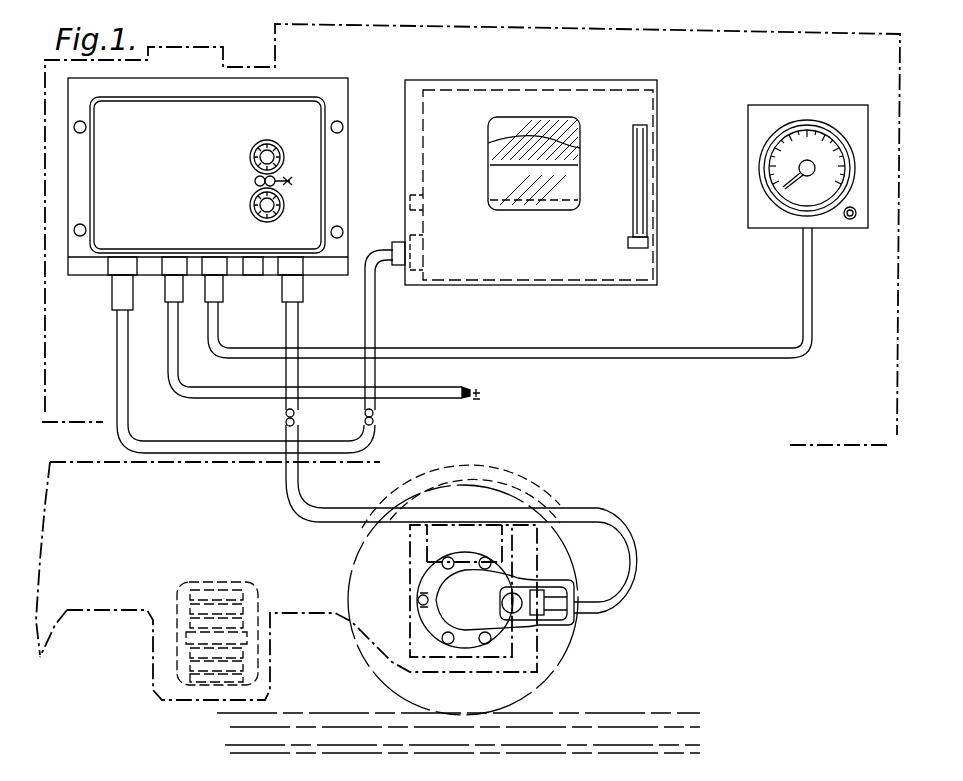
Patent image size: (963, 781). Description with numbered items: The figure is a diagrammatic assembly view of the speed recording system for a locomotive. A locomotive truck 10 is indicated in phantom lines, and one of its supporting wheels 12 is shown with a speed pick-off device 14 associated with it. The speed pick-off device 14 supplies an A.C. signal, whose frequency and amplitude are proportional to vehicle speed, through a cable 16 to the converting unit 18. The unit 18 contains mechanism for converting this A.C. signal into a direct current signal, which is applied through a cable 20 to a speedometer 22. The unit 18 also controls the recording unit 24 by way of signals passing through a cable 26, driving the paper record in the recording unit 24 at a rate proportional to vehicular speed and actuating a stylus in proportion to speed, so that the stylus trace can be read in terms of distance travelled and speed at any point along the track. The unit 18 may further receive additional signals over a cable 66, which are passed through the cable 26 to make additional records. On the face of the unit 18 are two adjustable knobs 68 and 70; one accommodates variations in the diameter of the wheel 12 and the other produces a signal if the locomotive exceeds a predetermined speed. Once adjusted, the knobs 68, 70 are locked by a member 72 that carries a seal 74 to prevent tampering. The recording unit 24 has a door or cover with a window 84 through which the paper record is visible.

The locomotive truck 10 is at (396, 481).
The supporting wheel 12 is at (515, 492).
The speed pick-off device 14 is at (521, 572).
The cable 16 is at (643, 548).
The converting unit 18 is at (225, 176).
The cable 20 is at (655, 352).
The speedometer 22 is at (785, 232).
The recording unit 24 is at (557, 172).
The cable 26 is at (370, 327).
The cable 66 is at (416, 398).
The knob 68 is at (255, 150).
The knob 70 is at (250, 204).
The locking member 72 is at (255, 181).
The seal 74 is at (283, 179).
The window 84 is at (570, 182).